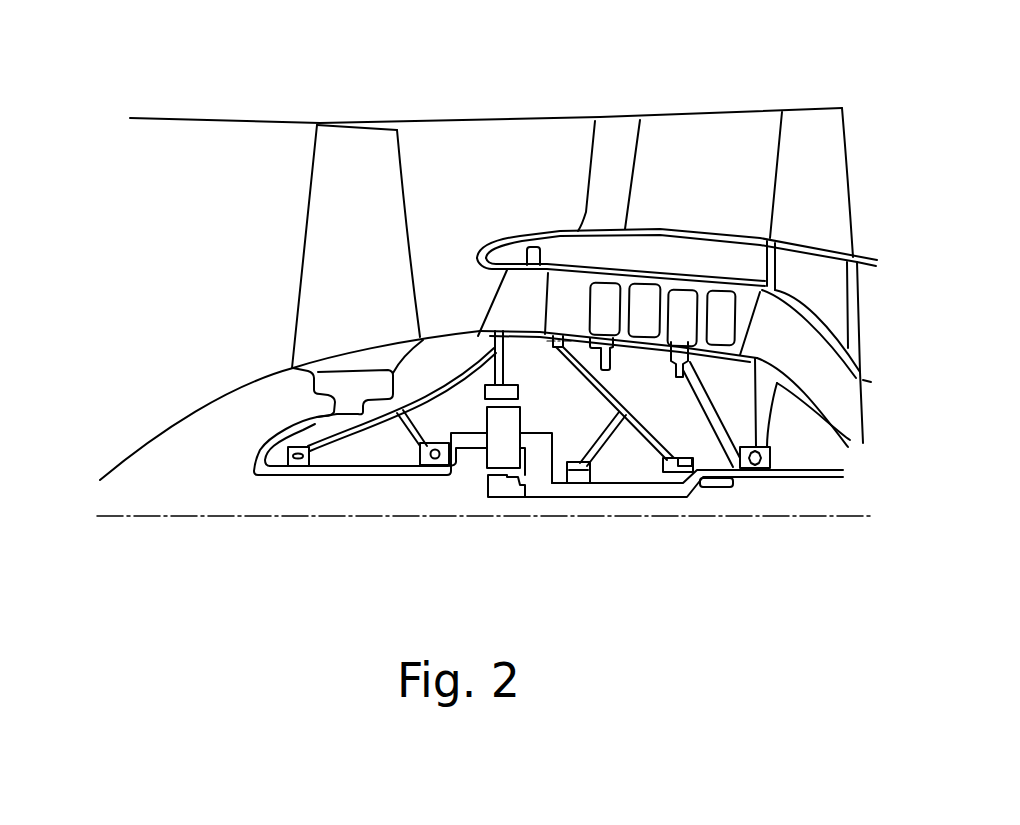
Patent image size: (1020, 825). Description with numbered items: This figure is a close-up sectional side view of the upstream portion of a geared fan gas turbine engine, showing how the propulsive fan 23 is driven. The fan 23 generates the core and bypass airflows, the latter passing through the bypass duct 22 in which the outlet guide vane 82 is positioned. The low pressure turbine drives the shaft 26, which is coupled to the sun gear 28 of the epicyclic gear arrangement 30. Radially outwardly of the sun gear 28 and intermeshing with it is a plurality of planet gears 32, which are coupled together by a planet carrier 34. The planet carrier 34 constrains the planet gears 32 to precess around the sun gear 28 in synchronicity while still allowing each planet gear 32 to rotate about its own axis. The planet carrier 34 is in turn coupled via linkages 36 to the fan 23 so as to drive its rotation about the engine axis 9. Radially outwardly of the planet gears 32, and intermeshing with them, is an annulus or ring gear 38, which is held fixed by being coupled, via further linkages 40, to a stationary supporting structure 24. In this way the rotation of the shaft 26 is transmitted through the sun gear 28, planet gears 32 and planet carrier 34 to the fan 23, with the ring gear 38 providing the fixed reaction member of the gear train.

The principal rotational axis 9 is at (285, 522).
The bypass duct 22 is at (687, 191).
The propulsive fan 23 is at (320, 249).
The stationary supporting structure 24 is at (512, 299).
The shaft 26 is at (649, 498).
The sun gear 28 is at (503, 488).
The epicyclic gear arrangement 30 is at (457, 493).
The planet gears 32 is at (492, 458).
The planet carrier 34 is at (544, 473).
The linkages 36 is at (457, 458).
The ring gear 38 is at (487, 390).
The linkages 40 is at (507, 372).
The outlet guide vane 82 is at (613, 145).